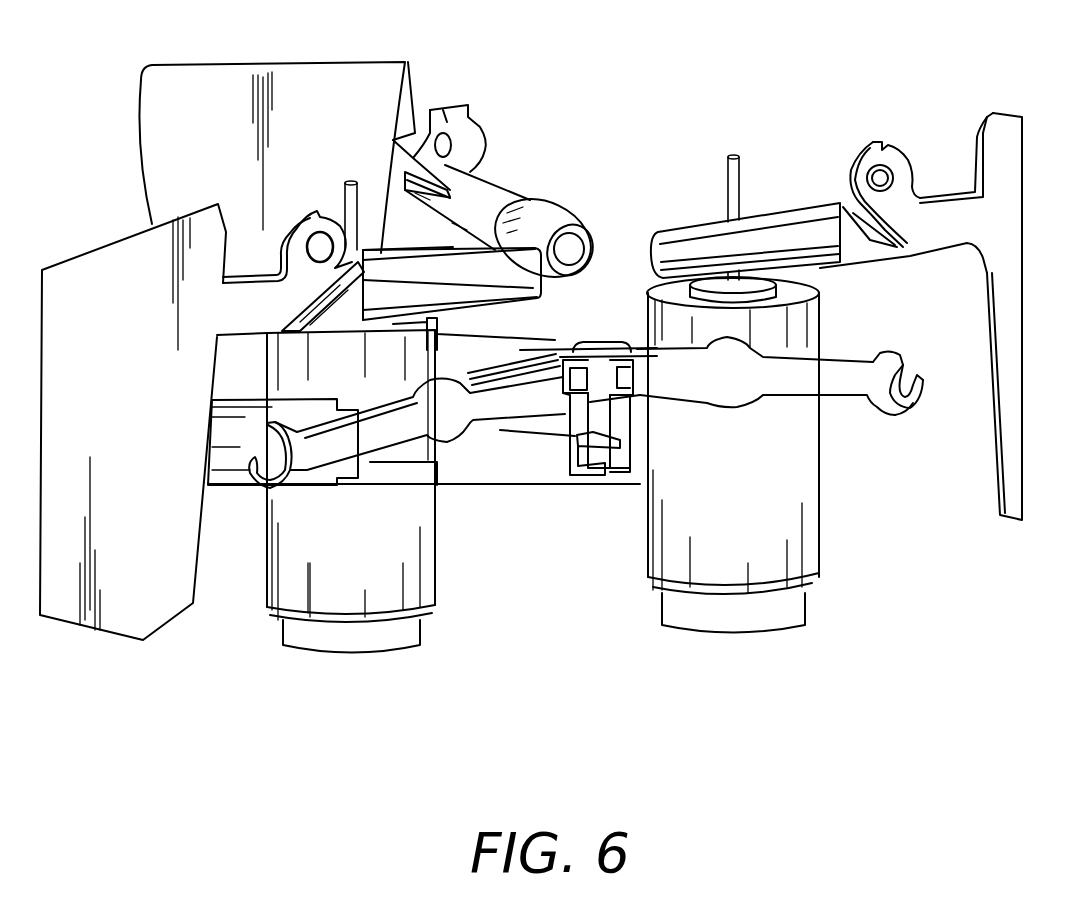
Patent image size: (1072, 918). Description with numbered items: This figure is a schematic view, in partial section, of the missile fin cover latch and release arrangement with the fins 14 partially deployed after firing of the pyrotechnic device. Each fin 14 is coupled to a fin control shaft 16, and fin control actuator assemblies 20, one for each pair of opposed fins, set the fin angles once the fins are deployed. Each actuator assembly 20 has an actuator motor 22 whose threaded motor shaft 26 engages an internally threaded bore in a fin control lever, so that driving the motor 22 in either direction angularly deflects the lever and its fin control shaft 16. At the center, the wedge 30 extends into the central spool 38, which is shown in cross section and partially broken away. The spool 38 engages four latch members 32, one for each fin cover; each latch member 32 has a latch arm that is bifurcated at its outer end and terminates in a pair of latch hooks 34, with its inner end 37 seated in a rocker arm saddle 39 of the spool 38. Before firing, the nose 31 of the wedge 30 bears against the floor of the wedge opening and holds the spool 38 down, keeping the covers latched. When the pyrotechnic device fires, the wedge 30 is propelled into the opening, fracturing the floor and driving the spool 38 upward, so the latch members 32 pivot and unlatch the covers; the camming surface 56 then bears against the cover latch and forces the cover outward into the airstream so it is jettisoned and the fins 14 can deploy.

The fin 14 is at (1003, 118).
The fin control shaft 16 is at (690, 230).
The fin control actuator assembly 20 is at (793, 638).
The actuator motor 22 is at (818, 558).
The threaded motor shaft 26 is at (738, 176).
The wedge 30 is at (507, 487).
The nose 31 is at (615, 480).
The latch member 32 is at (832, 408).
The latch hook 34 is at (925, 398).
The inner end 37 is at (630, 345).
The central spool 38 is at (590, 342).
The rocker arm saddle 39 is at (588, 392).
The camming surface 56 is at (900, 364).